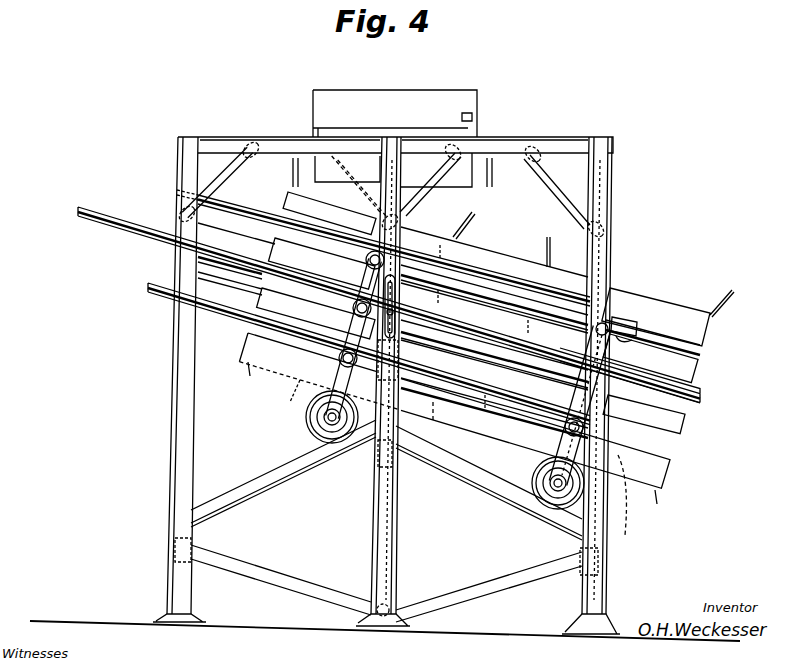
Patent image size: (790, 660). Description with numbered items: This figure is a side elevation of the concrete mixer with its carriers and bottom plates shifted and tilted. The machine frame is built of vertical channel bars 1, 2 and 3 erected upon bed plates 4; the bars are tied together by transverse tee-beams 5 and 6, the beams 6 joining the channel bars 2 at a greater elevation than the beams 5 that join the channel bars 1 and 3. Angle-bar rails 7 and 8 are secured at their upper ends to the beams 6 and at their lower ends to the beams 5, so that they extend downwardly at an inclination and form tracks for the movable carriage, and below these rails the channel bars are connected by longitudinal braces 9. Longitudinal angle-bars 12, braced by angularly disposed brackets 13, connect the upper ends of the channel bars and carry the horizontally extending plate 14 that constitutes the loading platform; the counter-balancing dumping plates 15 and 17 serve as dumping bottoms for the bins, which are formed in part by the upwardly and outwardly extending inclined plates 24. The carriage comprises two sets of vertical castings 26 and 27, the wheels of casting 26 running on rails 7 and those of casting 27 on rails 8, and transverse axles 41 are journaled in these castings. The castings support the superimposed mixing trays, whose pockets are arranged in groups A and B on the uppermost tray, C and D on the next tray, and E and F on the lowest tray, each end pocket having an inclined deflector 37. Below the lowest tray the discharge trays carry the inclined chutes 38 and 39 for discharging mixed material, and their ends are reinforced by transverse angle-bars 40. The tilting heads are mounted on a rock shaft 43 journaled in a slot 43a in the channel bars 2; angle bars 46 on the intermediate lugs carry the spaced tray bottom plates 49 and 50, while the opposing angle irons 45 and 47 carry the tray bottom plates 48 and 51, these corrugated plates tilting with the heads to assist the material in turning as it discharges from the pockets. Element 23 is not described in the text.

The channel bar 1 is at (603, 597).
The channel bar 2 is at (397, 555).
The channel bar 3 is at (167, 578).
The bed plate 4 is at (185, 626).
The tee-beam 5 is at (191, 545).
The tee-beam 6 is at (400, 460).
The rail 7 is at (275, 480).
The rail 8 is at (488, 480).
The longitudinal brace 9 is at (298, 572).
The longitudinal angle-bar 12 is at (563, 150).
The bracket 13 is at (225, 180).
The plate 14 is at (258, 136).
The dumping plate 15 is at (472, 125).
The dumping plate 17 is at (393, 170).
The finger 23 is at (488, 190).
The inclined plate 24 is at (313, 95).
The vertical casting 26 is at (320, 370).
The vertical casting 27 is at (600, 483).
The deflector 37 is at (294, 172).
The inclined chute 38 is at (632, 500).
The inclined chute 39 is at (290, 402).
The angle-bar 40 is at (245, 367).
The transverse axle 41 is at (350, 285).
The rock shaft 43 is at (400, 300).
The slot 43a is at (430, 340).
The angle iron 45 is at (640, 317).
The angle bar 46 is at (700, 402).
The angle-iron 47 is at (468, 400).
The tray bottom plate 48 is at (482, 270).
The tray bottom plate 49 is at (705, 391).
The tray bottom plate 50 is at (155, 200).
The tray bottom plate 51 is at (237, 295).
The group of pockets A is at (290, 200).
The group of pockets B is at (708, 320).
The group of pockets C is at (275, 244).
The group of pockets D is at (690, 372).
The group of pockets E is at (268, 292).
The group of pockets F is at (678, 430).